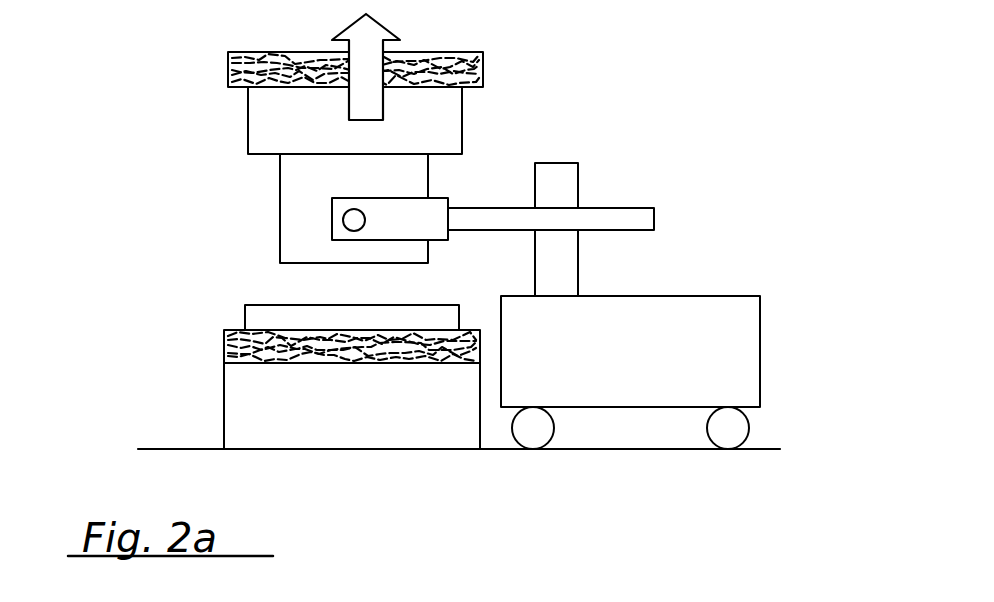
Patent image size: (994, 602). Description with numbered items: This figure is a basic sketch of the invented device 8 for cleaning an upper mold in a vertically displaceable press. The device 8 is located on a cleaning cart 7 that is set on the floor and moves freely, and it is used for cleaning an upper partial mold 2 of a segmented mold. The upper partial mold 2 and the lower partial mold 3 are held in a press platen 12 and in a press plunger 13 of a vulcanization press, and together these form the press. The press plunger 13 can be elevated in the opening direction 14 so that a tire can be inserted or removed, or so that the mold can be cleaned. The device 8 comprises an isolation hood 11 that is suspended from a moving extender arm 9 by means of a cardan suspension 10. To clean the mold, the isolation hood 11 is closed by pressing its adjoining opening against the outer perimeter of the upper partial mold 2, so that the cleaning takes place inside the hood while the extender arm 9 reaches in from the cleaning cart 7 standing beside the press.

The upper partial mold 2 is at (269, 117).
The lower partial mold 3 is at (259, 317).
The cleaning cart 7 is at (669, 351).
The device 8 is at (248, 225).
The extender arm 9 is at (472, 217).
The cardan suspension 10 is at (377, 225).
The isolation hood 11 is at (310, 189).
The press platen 12 is at (267, 345).
The press plunger 13 is at (253, 68).
The opening direction 14 is at (367, 42).